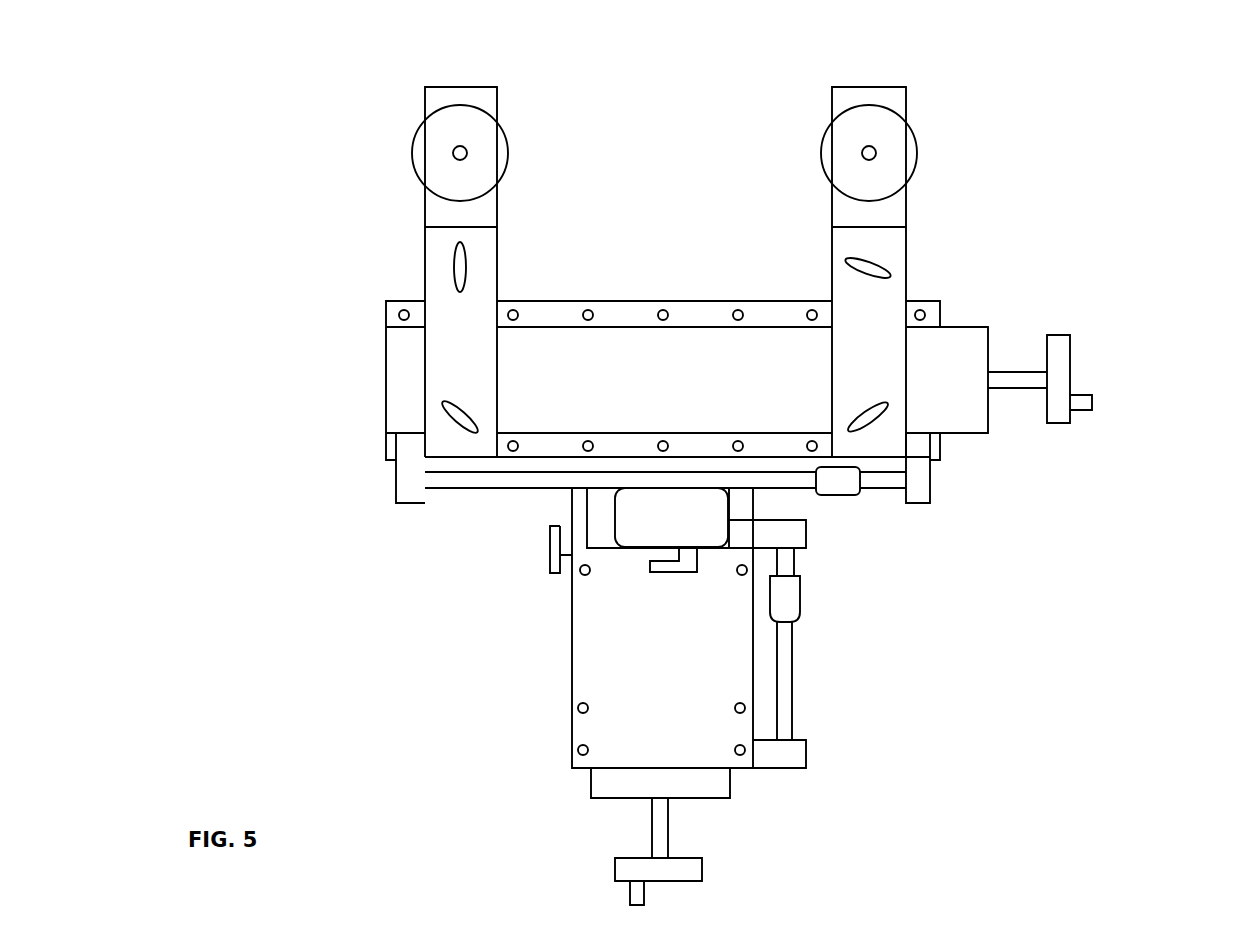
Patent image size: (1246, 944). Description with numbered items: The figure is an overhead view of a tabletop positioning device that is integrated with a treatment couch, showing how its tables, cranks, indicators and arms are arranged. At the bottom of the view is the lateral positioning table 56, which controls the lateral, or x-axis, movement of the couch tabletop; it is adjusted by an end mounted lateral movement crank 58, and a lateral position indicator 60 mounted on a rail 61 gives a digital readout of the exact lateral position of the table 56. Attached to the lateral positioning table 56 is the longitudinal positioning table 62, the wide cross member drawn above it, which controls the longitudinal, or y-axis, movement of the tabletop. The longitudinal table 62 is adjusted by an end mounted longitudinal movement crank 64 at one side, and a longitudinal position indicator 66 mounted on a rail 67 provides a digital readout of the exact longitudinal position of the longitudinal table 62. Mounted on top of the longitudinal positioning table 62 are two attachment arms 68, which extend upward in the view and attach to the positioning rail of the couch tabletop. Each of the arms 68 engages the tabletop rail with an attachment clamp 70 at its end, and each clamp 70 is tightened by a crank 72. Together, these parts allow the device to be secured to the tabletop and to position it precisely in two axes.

The lateral positioning table 56 is at (640, 660).
The lateral movement crank 58 is at (682, 871).
The lateral position indicator 60 is at (785, 596).
The rail 61 is at (785, 674).
The longitudinal positioning table 62 is at (625, 385).
The longitudinal movement crank 64 is at (1060, 392).
The longitudinal position indicator 66 is at (833, 482).
The rail 67 is at (880, 482).
The attachment arms 68 is at (450, 300).
The attachment clamps 70 is at (463, 93).
The cranks 72 is at (435, 151).